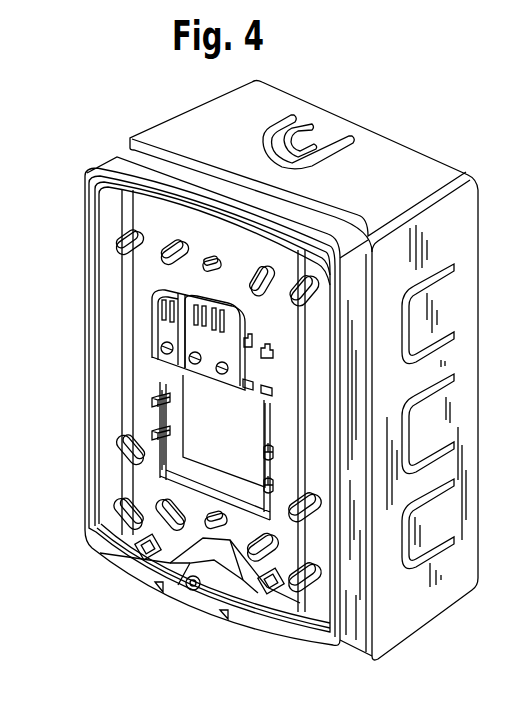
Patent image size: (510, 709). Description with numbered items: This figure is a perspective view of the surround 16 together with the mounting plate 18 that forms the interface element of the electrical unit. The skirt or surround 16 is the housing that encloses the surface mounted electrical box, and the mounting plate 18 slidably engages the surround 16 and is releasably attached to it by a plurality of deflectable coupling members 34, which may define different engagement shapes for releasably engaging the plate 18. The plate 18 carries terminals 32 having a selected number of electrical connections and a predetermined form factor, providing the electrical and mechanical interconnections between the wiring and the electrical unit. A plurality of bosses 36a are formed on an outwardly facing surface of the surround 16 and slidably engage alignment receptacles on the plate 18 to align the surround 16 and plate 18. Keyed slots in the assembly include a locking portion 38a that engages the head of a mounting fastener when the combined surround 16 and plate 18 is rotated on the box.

The surround 16 is at (400, 197).
The mounting plate 18 is at (290, 337).
The terminals 32 is at (78, 273).
The deflectable coupling members 34 is at (150, 400).
The bosses 36a is at (177, 533).
The locking portion 38a is at (128, 236).